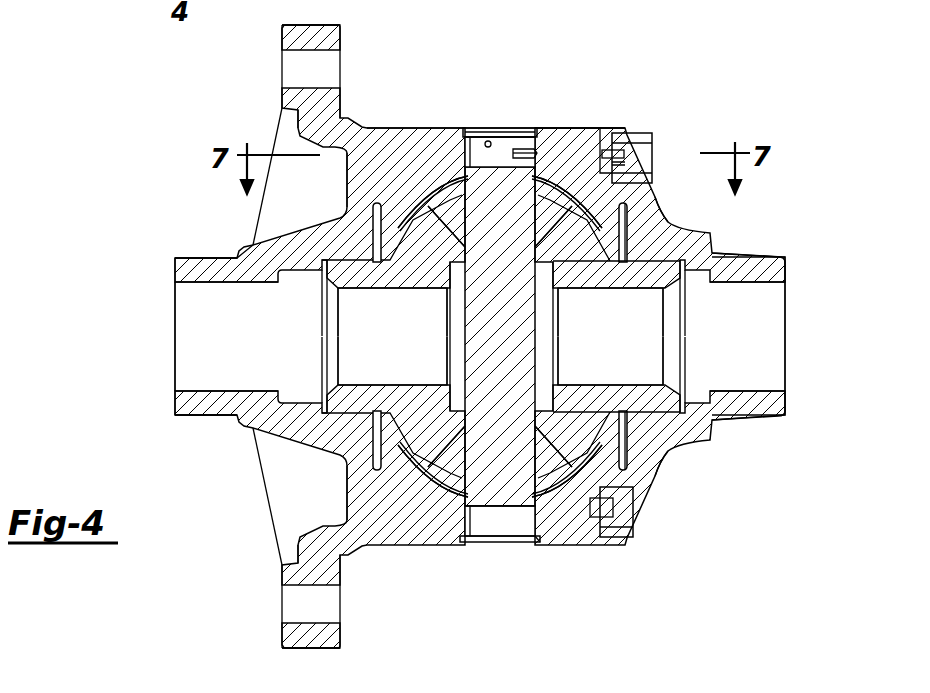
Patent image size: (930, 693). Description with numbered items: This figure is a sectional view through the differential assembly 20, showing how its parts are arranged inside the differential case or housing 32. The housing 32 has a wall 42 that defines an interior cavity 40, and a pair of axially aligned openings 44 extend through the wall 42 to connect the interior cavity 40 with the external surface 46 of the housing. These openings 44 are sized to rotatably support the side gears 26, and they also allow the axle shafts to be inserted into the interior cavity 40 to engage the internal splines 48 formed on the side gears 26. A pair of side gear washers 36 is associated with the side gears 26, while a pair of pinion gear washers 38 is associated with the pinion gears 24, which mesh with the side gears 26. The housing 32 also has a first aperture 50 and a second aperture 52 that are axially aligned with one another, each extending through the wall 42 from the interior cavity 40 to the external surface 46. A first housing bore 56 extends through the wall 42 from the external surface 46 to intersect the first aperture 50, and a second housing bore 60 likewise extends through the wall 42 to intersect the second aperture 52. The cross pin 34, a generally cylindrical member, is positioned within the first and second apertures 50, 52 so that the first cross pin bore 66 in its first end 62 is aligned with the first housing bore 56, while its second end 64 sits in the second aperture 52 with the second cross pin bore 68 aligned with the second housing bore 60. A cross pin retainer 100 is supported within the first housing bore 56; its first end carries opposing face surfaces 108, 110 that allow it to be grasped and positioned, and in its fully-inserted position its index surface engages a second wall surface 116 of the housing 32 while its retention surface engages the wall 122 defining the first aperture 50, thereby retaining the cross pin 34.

The differential assembly 20 is at (690, 42).
The pinion gears 24 is at (440, 200).
The side gears 26 is at (380, 279).
The differential case or housing 32 is at (367, 128).
The cross pin 34 is at (478, 131).
The side gear washers 36 is at (650, 208).
The pinion gear washers 38 is at (431, 187).
The interior cavity 40 is at (264, 370).
The wall 42 is at (190, 263).
The axially aligned openings 44 is at (195, 285).
The external surface 46 is at (753, 255).
The internal splines 48 is at (428, 288).
The first aperture 50 is at (466, 133).
The second aperture 52 is at (476, 520).
The first housing bore 56 is at (583, 143).
The second housing bore 60 is at (607, 520).
The first end 62 is at (535, 136).
The second end 64 is at (536, 544).
The first cross pin bore 66 is at (490, 142).
The second cross pin bore 68 is at (542, 540).
The cross pin retainer 100 is at (572, 96).
The face surface 108 is at (620, 133).
The face surface 110 is at (622, 155).
The second wall surface 116 is at (618, 165).
The wall defining first aperture 122 is at (527, 175).